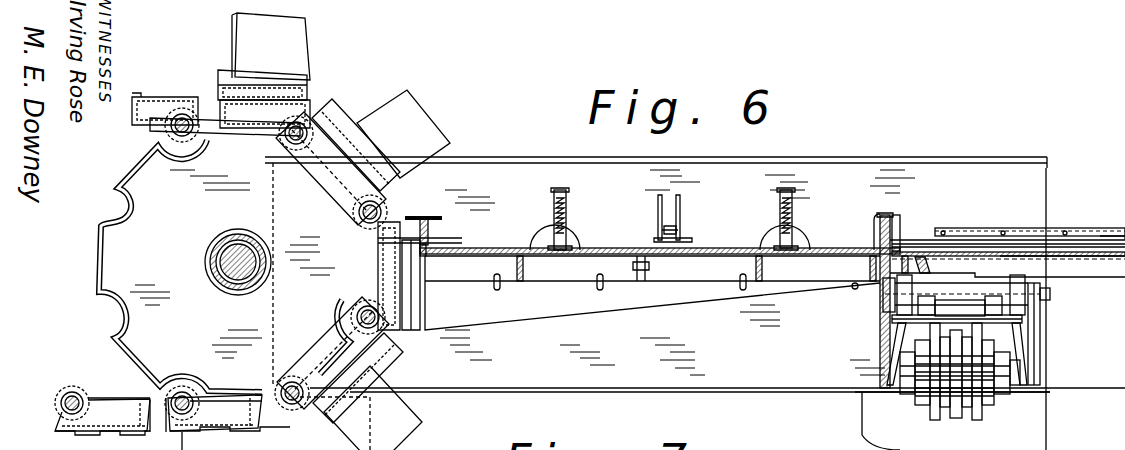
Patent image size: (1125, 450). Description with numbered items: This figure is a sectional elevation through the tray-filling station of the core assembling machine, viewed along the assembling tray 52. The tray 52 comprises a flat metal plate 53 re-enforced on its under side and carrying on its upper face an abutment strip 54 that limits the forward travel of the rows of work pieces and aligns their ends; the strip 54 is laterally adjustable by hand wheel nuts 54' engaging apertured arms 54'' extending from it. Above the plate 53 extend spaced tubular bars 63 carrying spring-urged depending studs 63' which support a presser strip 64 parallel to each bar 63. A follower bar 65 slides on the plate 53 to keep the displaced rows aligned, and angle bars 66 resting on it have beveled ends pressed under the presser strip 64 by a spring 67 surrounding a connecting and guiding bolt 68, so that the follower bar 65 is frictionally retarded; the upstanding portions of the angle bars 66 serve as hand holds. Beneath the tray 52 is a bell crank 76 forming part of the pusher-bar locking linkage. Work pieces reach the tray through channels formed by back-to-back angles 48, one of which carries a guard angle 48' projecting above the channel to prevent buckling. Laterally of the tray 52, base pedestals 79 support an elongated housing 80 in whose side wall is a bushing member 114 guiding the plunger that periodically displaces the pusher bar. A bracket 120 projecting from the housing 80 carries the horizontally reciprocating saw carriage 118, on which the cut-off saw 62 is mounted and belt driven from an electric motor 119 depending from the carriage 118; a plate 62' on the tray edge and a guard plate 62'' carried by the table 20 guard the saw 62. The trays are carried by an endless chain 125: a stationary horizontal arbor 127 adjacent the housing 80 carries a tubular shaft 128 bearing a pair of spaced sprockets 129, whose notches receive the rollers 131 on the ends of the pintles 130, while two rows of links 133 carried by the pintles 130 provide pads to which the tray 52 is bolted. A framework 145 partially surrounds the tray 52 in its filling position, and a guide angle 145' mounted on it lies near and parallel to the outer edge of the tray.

The table 20 is at (1090, 238).
The angles 48 is at (1112, 224).
The guard angles 48' is at (1030, 222).
The assembling tray 52 is at (399, 122).
The flat metal plate 53 is at (711, 254).
The abutment strip 54 is at (435, 237).
The hand wheel nuts 54' is at (426, 202).
The apertured arms 54'' is at (447, 224).
The cut-off saw 62 is at (866, 290).
The plate 62' is at (865, 229).
The guard plate 62'' is at (912, 230).
The tubular bars 63 is at (570, 213).
The depending studs 63' is at (578, 215).
The presser strip 64 is at (552, 222).
The follower bar 65 is at (836, 226).
The angle bars 66 is at (680, 206).
The spring 67 is at (660, 220).
The connecting and guiding bolt 68 is at (676, 230).
The bell crank 76 is at (853, 286).
The base pedestals 79 is at (875, 418).
The elongated housing 80 is at (503, 172).
The bushing member 114 is at (792, 208).
The saw carriage 118 is at (1022, 320).
The electric motor 119 is at (966, 422).
The bracket 120 is at (887, 370).
The endless chain 125 is at (197, 102).
The arbors 127 is at (231, 256).
The tubular shaft 128 is at (229, 286).
The sprockets 129 is at (107, 258).
The pintles 130 is at (356, 316).
The rollers 131 is at (165, 396).
The links 133 is at (152, 429).
The framework 145 is at (1008, 247).
The guide angle 145' is at (1008, 237).